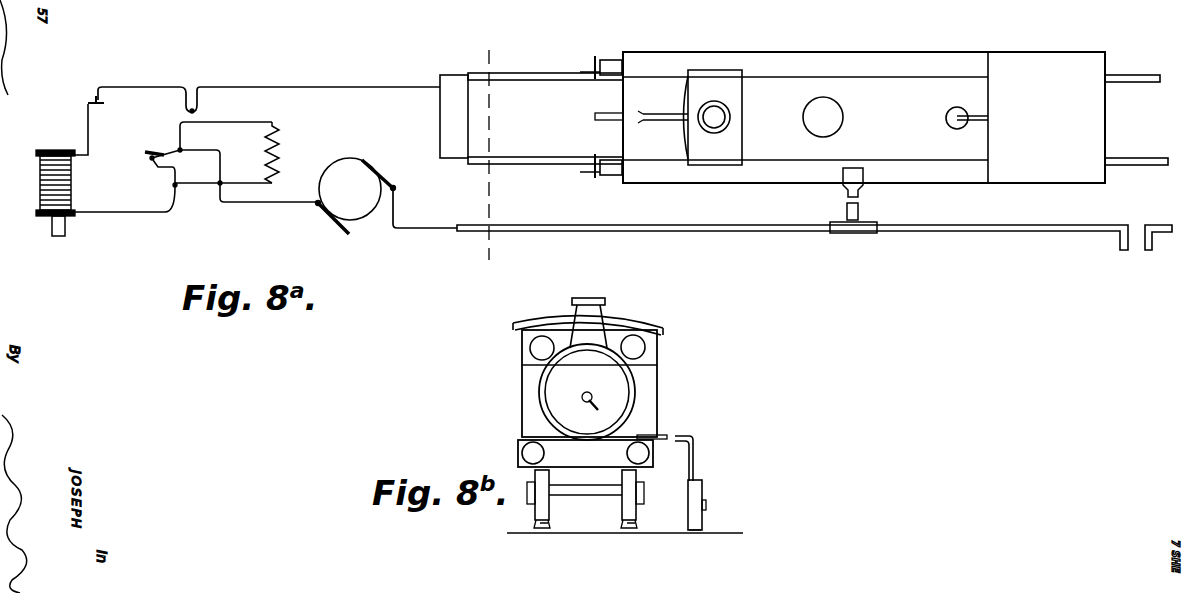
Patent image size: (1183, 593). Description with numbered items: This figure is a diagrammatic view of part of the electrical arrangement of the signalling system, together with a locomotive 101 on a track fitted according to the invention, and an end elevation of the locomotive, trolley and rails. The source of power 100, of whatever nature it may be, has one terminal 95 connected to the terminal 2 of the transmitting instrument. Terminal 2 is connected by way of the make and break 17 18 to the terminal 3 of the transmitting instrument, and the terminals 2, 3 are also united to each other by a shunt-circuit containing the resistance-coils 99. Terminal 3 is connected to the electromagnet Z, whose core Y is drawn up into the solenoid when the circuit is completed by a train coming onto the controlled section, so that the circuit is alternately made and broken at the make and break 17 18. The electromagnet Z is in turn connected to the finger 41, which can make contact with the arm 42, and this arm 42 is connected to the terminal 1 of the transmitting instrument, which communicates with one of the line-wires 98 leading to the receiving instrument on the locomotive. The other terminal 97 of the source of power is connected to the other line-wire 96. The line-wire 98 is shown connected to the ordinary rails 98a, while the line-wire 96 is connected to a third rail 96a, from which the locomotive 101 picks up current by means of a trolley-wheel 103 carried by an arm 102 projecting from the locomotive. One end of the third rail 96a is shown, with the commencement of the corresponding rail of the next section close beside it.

In FIG. 8A, the terminal 1 is at (196, 110).
In FIG. 8A, the terminal 2 is at (183, 148).
In FIG. 8A, the terminal 3 is at (177, 188).
In FIG. 8A, the make and break 17 is at (149, 160).
In FIG. 8A, the make and break 18 is at (156, 144).
In FIG. 8A, the finger 41 is at (95, 112).
In FIG. 8A, the arm 42 is at (90, 95).
In FIG. 8A, the electromagnet Z is at (73, 180).
In FIG. 8A, the core Y is at (65, 230).
In FIG. 8A, the terminal of the source of power 95 is at (330, 220).
In FIG. 8A, the line-wire 96 is at (412, 231).
In FIG. 8A, the third rail 96a is at (1160, 212).
In FIG. 8B, the third rail 96a is at (696, 531).
In FIG. 8A, the terminal of the source of power 97 is at (387, 160).
In FIG. 8A, the line-wire 98 is at (373, 88).
In FIG. 8A, the ordinary rails 98a is at (525, 82).
In FIG. 8B, the ordinary rails 98a is at (618, 546).
In FIG. 8A, the resistance-coils 99 is at (280, 140).
In FIG. 8A, the source of power 100 is at (350, 189).
In FIG. 8A, the locomotive 101 is at (870, 92).
In FIG. 8B, the locomotive 101 is at (637, 396).
In FIG. 8A, the arm 102 is at (860, 211).
In FIG. 8B, the arm 102 is at (694, 458).
In FIG. 8A, the trolley-wheel 103 is at (852, 235).
In FIG. 8B, the trolley-wheel 103 is at (704, 494).